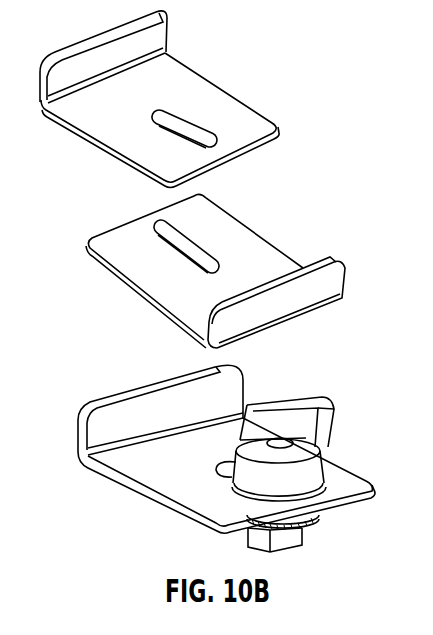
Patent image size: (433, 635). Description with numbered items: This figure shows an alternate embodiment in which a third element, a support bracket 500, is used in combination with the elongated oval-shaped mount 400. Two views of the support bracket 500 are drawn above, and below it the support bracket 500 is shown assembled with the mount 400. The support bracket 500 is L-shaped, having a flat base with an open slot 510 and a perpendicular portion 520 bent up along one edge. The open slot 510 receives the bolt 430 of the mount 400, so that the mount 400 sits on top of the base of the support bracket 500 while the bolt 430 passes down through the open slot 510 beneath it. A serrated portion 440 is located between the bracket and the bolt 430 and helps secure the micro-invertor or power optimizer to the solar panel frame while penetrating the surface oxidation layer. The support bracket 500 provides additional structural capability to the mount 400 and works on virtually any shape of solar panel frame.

The elongated oval-shaped mount 400 is at (335, 428).
The bolt 430 is at (290, 553).
The serrated portion 440 is at (322, 522).
The support bracket 500 is at (207, 88).
The open slot 510 is at (215, 140).
The perpendicular portion 520 is at (170, 37).